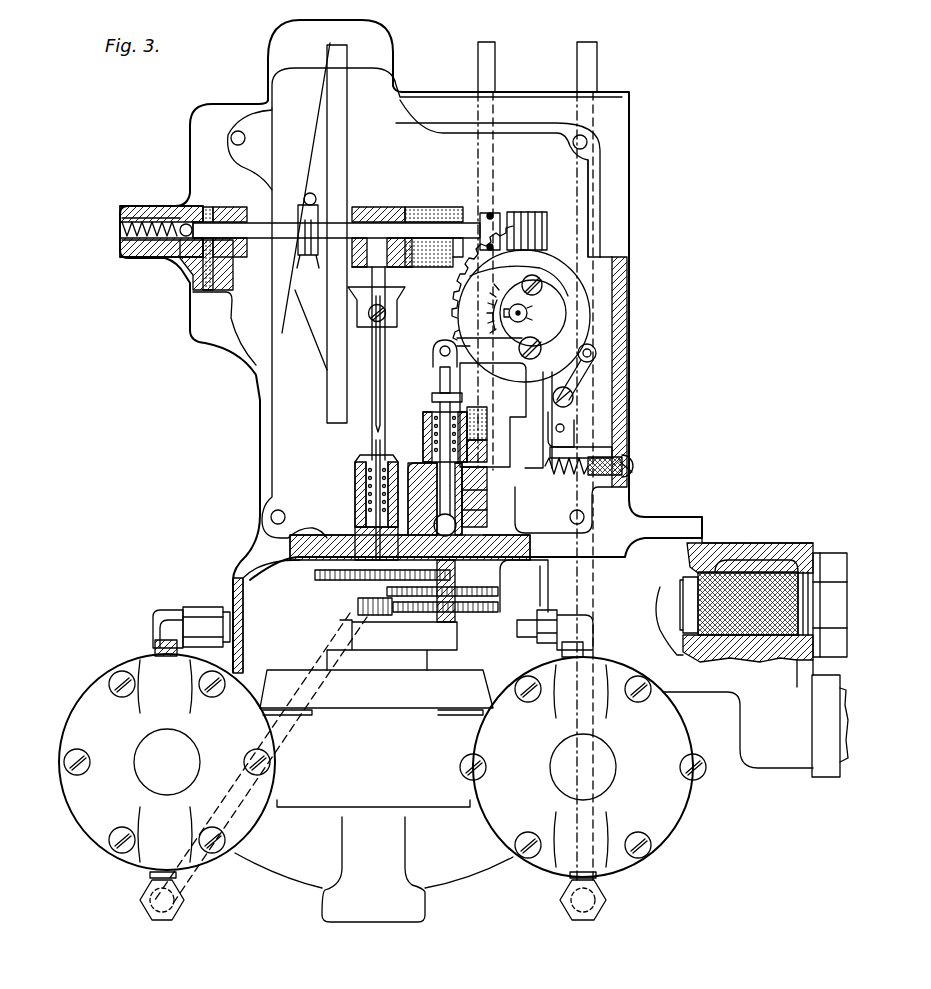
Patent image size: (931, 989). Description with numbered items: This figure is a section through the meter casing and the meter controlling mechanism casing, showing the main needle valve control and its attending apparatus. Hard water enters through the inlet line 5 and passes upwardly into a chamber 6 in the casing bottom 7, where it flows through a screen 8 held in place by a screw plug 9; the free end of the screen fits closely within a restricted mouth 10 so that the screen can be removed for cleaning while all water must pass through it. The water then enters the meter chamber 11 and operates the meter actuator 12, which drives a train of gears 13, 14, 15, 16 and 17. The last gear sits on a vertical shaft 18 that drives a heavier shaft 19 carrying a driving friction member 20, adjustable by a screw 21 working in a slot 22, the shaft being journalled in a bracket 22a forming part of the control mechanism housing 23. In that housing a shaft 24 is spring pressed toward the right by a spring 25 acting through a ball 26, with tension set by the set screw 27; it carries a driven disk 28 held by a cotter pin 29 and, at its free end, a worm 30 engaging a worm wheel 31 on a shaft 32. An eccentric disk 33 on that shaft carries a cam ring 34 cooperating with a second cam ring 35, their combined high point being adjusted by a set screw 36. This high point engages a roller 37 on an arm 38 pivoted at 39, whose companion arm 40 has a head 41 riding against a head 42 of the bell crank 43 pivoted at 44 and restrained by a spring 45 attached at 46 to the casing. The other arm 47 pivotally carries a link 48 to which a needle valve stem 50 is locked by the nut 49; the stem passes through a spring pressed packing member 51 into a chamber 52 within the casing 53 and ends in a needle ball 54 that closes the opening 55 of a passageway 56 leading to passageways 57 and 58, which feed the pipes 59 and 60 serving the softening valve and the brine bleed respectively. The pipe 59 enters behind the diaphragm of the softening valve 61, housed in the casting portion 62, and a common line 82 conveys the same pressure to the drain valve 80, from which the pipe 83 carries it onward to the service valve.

The hard water inlet line 5 is at (826, 770).
The chamber 6 is at (740, 572).
The casing bottom 7 is at (770, 543).
The screen 8 is at (722, 578).
The screw plug 9 is at (808, 553).
The restricted mouth 10 is at (675, 590).
The meter chamber 11 is at (495, 690).
The meter actuator 12 is at (422, 700).
The gear 13 is at (358, 607).
The gear 14 is at (445, 621).
The gear 15 is at (538, 580).
The gear 16 is at (458, 584).
The gear 17 is at (315, 576).
The vertical shaft 18 is at (358, 481).
The shaft 19 is at (386, 356).
The driving friction member 20 is at (400, 312).
The screw 21 is at (392, 318).
The slot 22 is at (380, 380).
The bracket 22a is at (400, 210).
The control mechanism housing 23 is at (445, 122).
The shaft 24 is at (375, 226).
The spring 25 is at (155, 215).
The ball 26 is at (184, 224).
The set screw 27 is at (122, 229).
The driven disk 28 is at (347, 185).
The cotter pin 29 is at (305, 196).
The worm 30 is at (545, 214).
The worm wheel 31 is at (462, 292).
The shaft 32 is at (528, 308).
The eccentric disk 33 is at (552, 270).
The cam ring 34 is at (538, 260).
The cam ring 35 is at (580, 258).
The set screw 36 is at (534, 280).
The cam follower or roller 37 is at (596, 350).
The arm 38 is at (600, 365).
The pivot 39 is at (580, 410).
The arm 40 is at (566, 425).
The head 41 is at (600, 440).
The head 42 is at (552, 432).
The bell crank 43 is at (520, 398).
The pivot 44 is at (518, 350).
The spring 45 is at (580, 458).
The attachment point 46 is at (632, 462).
The arm 47 is at (445, 338).
The link 48 is at (440, 378).
The nut 49 is at (432, 397).
The needle valve stem 50 is at (432, 412).
The spring pressed packing member 51 is at (480, 423).
The chamber 52 is at (480, 455).
The casing 53 is at (482, 470).
The needle ball 54 is at (484, 495).
The opening 55 is at (542, 560).
The passageway 56 is at (578, 560).
The passageway 57 is at (412, 470).
The passageway 58 is at (458, 520).
The pipe 59 is at (184, 885).
The pipe 60 is at (495, 84).
The softening valve 61 is at (88, 845).
The casting portion 62 is at (290, 875).
The drain valve 80 is at (680, 810).
The common line 82 is at (222, 604).
The pipe 83 is at (597, 84).